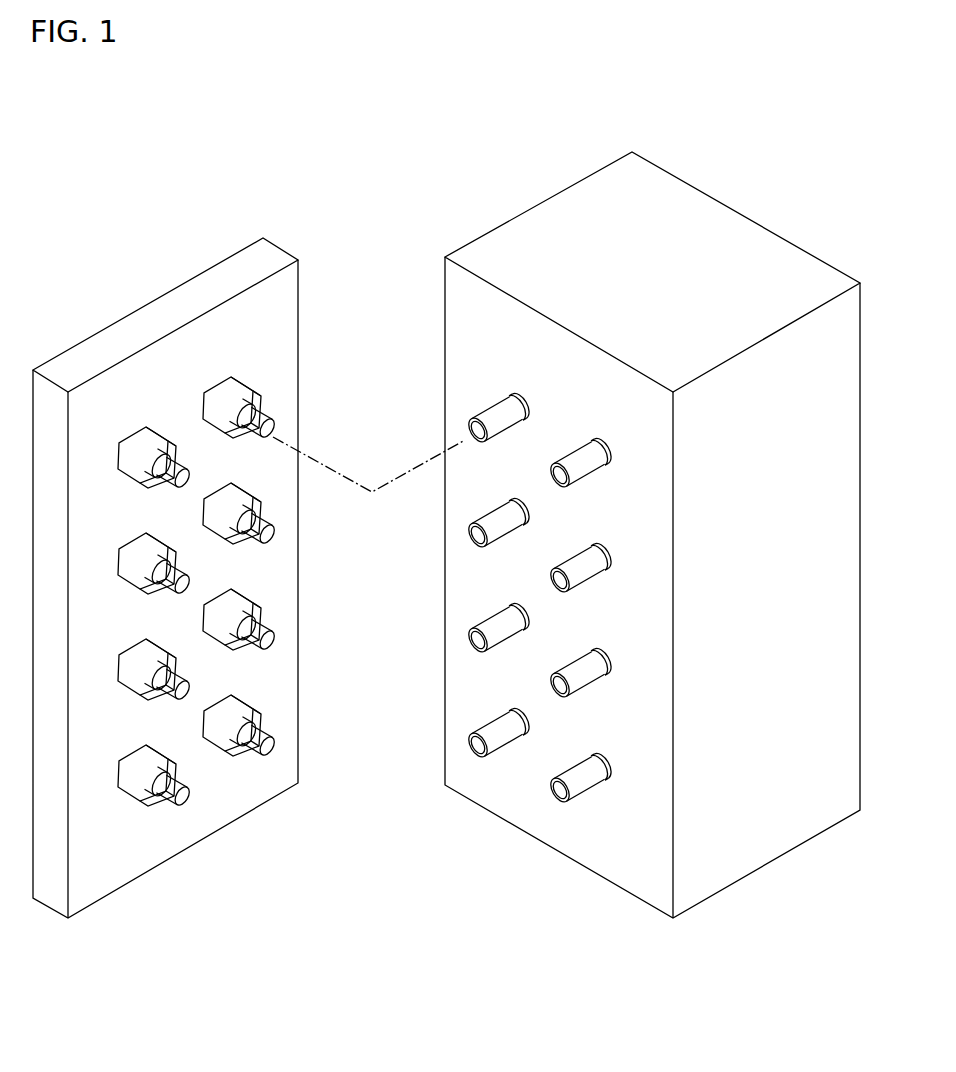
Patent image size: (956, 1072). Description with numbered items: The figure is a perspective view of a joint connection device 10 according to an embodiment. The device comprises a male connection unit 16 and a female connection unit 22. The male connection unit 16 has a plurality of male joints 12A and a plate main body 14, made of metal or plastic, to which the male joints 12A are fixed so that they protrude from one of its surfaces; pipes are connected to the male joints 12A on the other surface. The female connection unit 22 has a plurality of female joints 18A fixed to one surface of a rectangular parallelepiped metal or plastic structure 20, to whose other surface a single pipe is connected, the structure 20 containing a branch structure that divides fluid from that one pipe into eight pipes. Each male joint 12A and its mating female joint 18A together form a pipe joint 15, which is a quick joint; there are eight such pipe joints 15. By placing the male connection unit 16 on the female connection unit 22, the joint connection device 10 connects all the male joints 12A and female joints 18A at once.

The joint connection device 10 is at (122, 258).
The plate main body 14 is at (285, 323).
The male connection unit 16 is at (283, 240).
The male joint 12A is at (272, 398).
The pipe joint 15 is at (420, 392).
The female joint 18A is at (460, 422).
The structure 20 is at (457, 288).
The female connection unit 22 is at (728, 188).